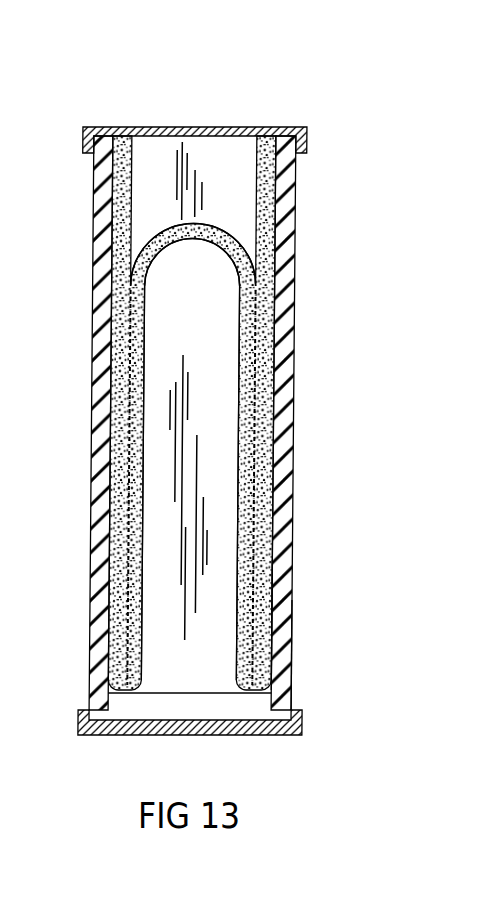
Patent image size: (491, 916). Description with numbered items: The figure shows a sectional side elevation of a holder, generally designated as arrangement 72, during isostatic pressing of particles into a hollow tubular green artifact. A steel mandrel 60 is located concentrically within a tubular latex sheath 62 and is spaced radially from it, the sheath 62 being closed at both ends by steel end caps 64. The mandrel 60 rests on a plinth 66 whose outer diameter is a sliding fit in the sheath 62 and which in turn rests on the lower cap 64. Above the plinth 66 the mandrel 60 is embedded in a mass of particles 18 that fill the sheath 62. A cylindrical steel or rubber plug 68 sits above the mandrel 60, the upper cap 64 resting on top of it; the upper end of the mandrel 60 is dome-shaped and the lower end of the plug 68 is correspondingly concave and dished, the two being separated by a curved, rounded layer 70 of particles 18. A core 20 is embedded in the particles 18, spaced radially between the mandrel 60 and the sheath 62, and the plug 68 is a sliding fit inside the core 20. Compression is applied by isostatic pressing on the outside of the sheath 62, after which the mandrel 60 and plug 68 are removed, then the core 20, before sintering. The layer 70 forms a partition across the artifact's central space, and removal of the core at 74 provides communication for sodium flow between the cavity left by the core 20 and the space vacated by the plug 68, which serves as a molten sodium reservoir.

The arrangement 72 is at (113, 82).
The core removal region 74 is at (138, 220).
The steel end caps 64 is at (232, 127).
The plug 68 is at (242, 168).
The curved rounded layer of particles 70 is at (170, 236).
The tubular latex sheath 62 is at (284, 418).
The steel mandrel 60 is at (165, 490).
The core 20 is at (270, 610).
The particles 18 is at (284, 669).
The plinth 66 is at (132, 703).